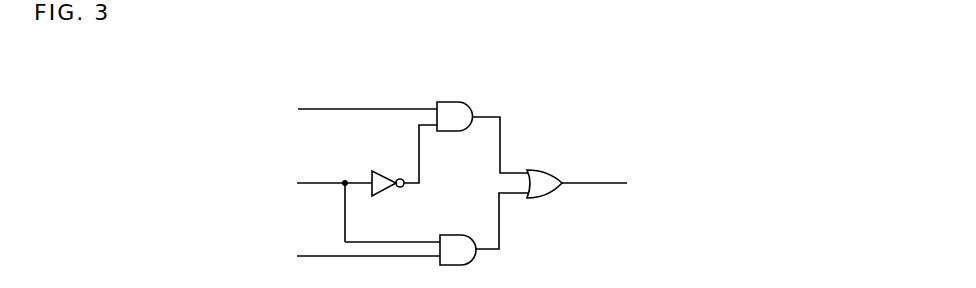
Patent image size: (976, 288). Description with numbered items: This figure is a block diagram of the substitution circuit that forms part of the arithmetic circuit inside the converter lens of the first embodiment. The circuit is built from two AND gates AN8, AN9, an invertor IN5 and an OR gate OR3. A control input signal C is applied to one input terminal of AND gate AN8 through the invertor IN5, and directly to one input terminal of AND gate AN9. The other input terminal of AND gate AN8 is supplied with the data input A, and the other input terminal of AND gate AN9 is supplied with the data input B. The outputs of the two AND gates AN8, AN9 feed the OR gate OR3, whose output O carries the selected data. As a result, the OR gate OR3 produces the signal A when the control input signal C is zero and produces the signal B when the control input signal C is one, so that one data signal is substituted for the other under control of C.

The AND gate AN8 is at (464, 102).
The AND gate AN9 is at (462, 235).
The invertor IN5 is at (386, 172).
The OR gate OR3 is at (557, 170).
The data input A is at (358, 109).
The data input B is at (360, 257).
The control input signal C is at (360, 208).
The output signal O is at (602, 184).